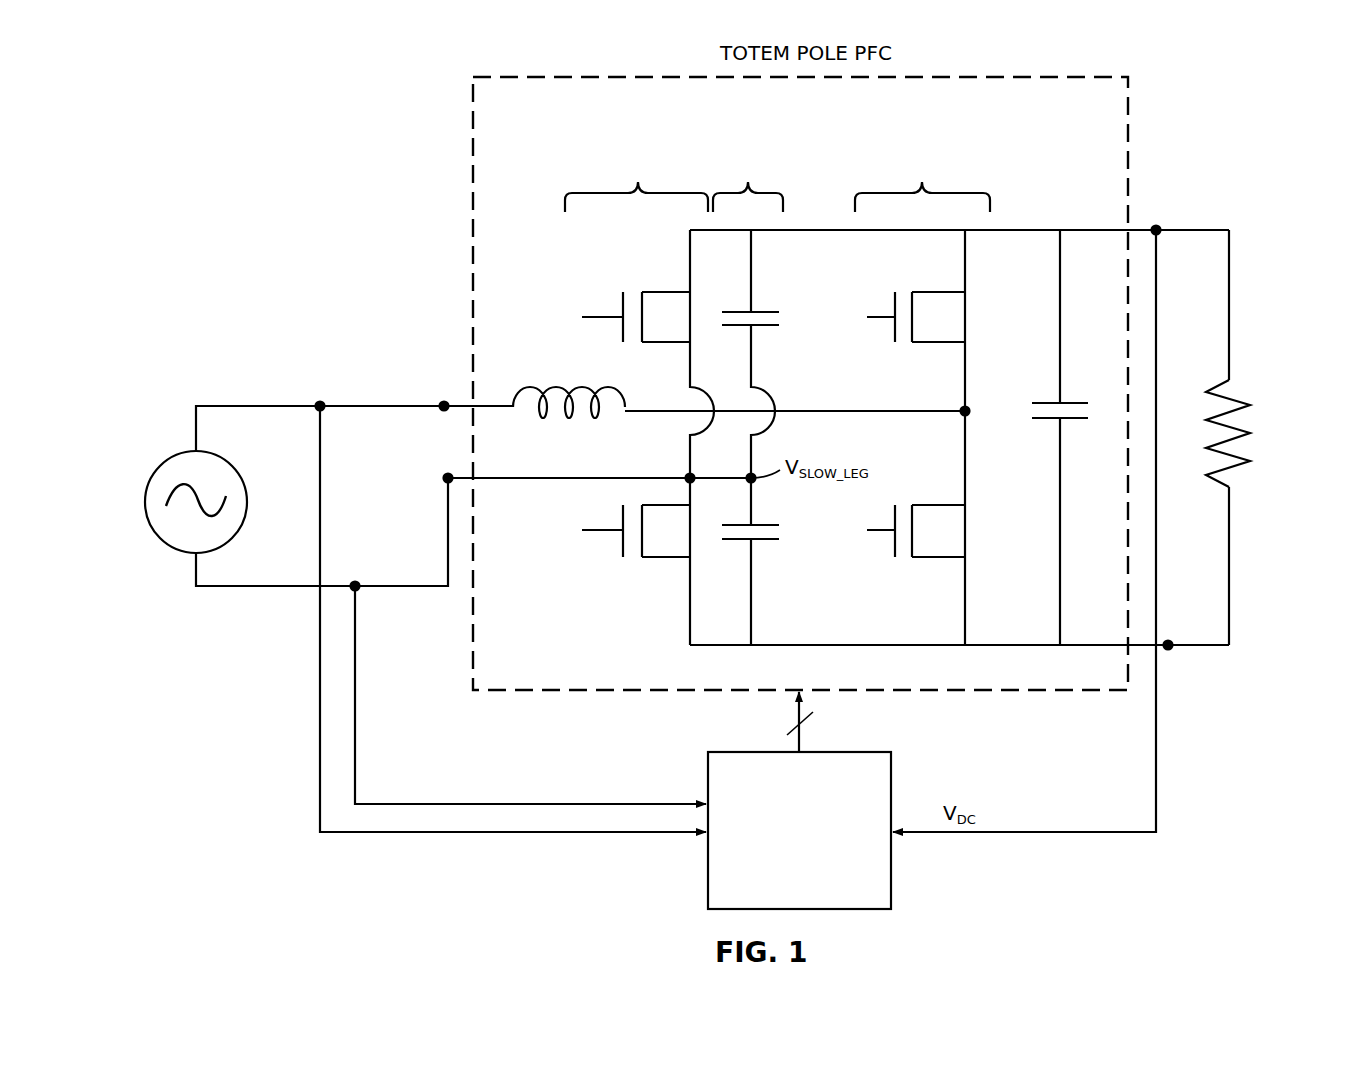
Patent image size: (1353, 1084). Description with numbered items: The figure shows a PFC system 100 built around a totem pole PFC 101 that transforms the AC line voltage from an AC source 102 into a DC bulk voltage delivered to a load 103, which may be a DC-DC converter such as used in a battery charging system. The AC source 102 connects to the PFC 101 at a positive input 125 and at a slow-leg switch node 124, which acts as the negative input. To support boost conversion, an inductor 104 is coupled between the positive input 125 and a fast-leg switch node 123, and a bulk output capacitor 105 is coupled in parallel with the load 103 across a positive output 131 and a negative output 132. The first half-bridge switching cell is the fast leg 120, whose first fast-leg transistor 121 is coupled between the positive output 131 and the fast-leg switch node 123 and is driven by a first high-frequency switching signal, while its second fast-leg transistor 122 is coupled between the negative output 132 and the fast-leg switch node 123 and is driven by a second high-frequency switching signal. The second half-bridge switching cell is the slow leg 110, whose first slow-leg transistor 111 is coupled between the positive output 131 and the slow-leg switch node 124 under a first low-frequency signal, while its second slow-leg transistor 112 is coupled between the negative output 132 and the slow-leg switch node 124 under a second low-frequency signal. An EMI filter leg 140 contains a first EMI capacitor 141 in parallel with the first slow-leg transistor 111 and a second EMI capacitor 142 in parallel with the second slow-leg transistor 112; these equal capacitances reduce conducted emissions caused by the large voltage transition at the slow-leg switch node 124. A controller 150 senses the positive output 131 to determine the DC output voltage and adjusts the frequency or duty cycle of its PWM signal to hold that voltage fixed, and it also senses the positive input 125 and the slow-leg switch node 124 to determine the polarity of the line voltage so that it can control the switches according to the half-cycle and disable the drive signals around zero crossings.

The PFC system 100 is at (221, 95).
The totem pole PFC 101 is at (597, 75).
The AC source 102 is at (158, 545).
The load 103 is at (1259, 422).
The inductor 104 is at (559, 437).
The bulk output capacitor 105 is at (1043, 431).
The slow leg 110 is at (638, 175).
The first slow-leg transistor 111 is at (637, 279).
The second slow-leg transistor 112 is at (625, 571).
The fast leg 120 is at (922, 175).
The first fast-leg transistor 121 is at (895, 281).
The second fast-leg transistor 122 is at (921, 571).
The fast-leg switch node 123 is at (953, 405).
The slow-leg switch node 124 is at (436, 483).
The positive input 125 is at (436, 399).
The positive output 131 is at (1159, 221).
The negative output 132 is at (1182, 638).
The EMI filter leg 140 is at (748, 175).
The first EMI capacitor 141 is at (767, 300).
The second EMI capacitor 142 is at (736, 551).
The controller 150 is at (733, 750).